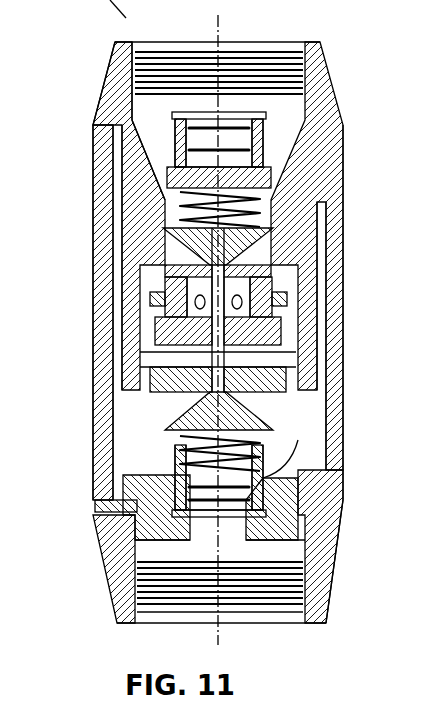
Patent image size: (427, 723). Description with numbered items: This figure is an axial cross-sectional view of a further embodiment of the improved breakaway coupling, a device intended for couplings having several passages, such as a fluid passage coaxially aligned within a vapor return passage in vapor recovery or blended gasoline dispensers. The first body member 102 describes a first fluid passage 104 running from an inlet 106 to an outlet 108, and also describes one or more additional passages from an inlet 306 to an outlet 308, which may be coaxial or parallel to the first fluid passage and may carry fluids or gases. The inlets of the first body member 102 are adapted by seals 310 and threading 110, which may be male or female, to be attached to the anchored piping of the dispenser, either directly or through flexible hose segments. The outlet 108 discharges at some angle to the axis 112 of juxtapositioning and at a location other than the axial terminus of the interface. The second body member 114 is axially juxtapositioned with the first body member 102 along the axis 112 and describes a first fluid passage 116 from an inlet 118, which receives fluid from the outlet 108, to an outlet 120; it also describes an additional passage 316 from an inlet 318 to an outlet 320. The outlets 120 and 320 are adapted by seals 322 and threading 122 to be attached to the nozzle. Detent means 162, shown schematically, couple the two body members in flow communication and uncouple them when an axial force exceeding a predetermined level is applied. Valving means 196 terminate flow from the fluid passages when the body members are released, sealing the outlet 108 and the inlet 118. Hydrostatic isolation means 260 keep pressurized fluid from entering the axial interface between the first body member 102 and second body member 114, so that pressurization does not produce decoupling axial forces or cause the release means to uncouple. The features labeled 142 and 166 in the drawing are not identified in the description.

The first body member 102 is at (323, 73).
The first fluid passage 104 is at (298, 178).
The inlet 106 is at (220, 44).
The outlet 108 is at (150, 302).
The threading 110 is at (323, 54).
The axis 112 is at (240, 418).
The second body member 114 is at (322, 565).
The first fluid passage 116 is at (250, 448).
The inlet 118 is at (140, 313).
The outlet 120 is at (240, 562).
The threading 122 is at (128, 614).
The chamfer 142 is at (113, 42).
The detent means 162 is at (95, 502).
The fitting 166 is at (260, 262).
The valving means 196 is at (345, 273).
The hydrostatic isolation means 260 is at (346, 330).
The inlet 306 is at (145, 155).
The outlet 308 is at (133, 150).
The seals 310 is at (262, 175).
The additional passage 316 is at (295, 495).
The inlet 318 is at (320, 398).
The outlet 320 is at (305, 582).
The seals 322 is at (280, 530).